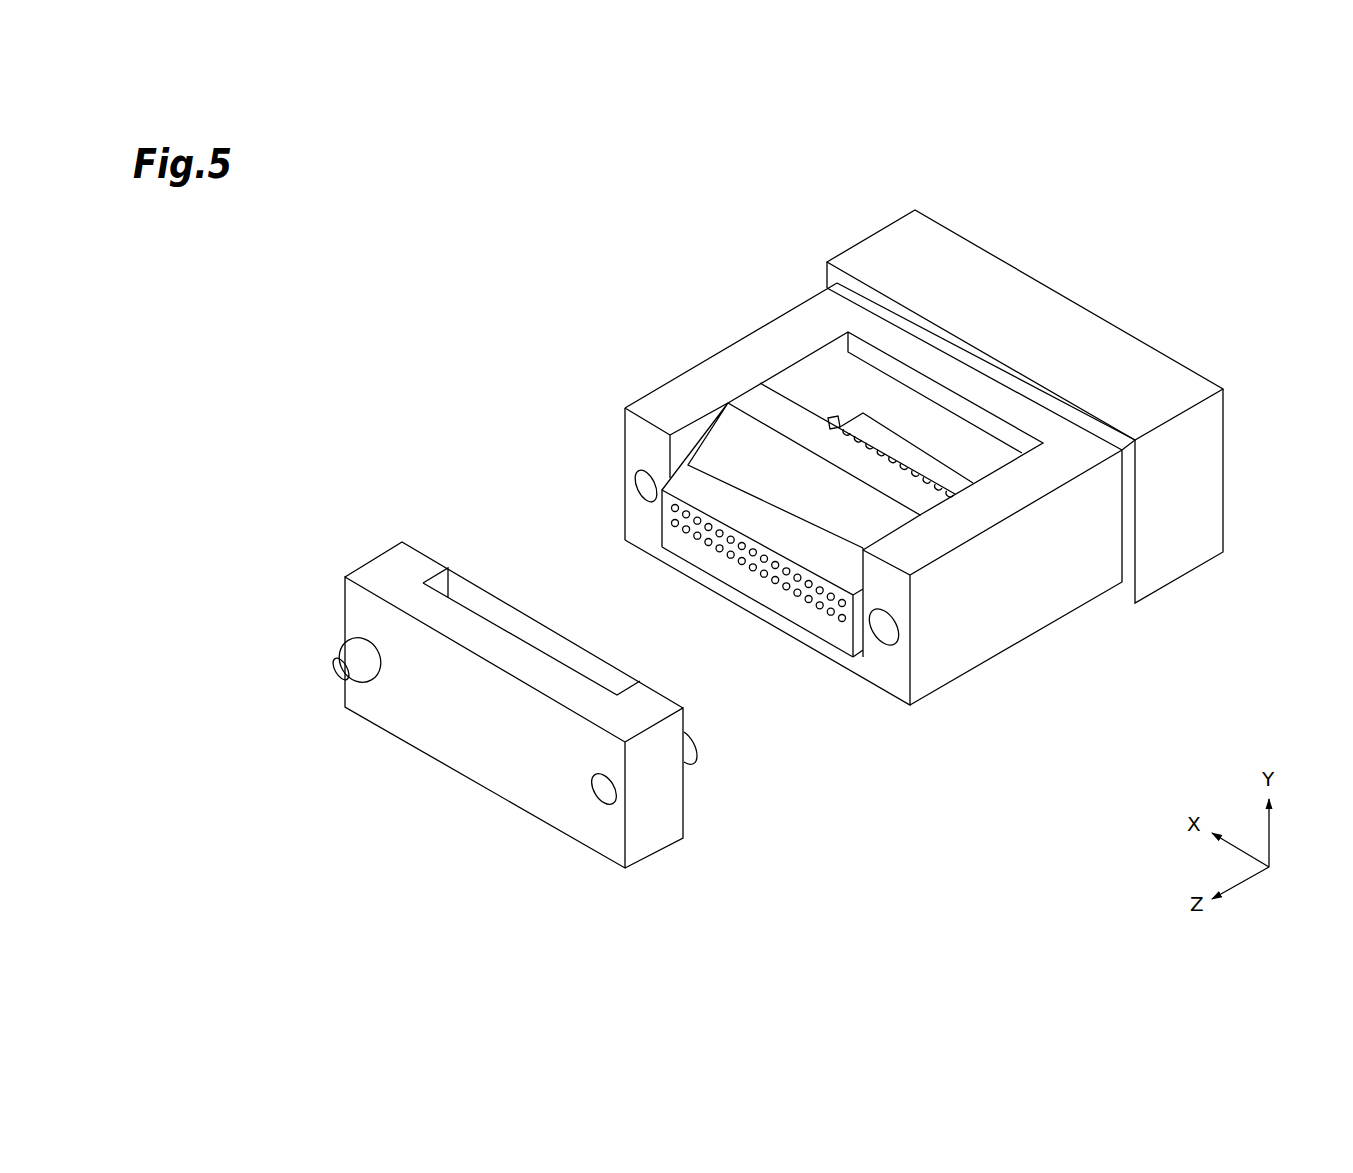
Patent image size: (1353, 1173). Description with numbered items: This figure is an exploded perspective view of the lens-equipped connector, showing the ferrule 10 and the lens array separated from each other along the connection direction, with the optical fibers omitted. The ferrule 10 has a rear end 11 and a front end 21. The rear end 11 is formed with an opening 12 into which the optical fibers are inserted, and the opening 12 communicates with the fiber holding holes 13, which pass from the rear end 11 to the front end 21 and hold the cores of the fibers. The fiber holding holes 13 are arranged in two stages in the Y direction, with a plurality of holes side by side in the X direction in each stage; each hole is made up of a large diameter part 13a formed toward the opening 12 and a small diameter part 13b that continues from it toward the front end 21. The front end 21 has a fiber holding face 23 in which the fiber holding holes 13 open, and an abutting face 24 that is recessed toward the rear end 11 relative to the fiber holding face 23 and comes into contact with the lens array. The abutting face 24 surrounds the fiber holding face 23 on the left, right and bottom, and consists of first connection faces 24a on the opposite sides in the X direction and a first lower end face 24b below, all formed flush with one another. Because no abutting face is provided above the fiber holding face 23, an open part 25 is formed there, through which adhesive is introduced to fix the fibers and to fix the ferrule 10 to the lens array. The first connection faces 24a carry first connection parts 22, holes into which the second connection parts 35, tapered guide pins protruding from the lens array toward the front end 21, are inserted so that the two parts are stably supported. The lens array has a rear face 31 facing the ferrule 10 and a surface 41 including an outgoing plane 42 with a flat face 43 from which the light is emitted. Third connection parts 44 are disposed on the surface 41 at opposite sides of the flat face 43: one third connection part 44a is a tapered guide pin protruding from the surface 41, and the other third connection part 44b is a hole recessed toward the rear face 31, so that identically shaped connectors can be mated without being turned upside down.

The ferrule 10 is at (750, 263).
The rear end 11 is at (900, 208).
The opening 12 is at (1070, 292).
The fiber holding holes 13 is at (960, 491).
The large diameter part 13a is at (897, 460).
The small diameter part 13b is at (707, 527).
The front end 21 is at (640, 400).
The first connection parts 22 is at (642, 480).
The fiber holding face 23 is at (792, 608).
The abutting face 24 is at (619, 639).
The first connection faces 24a is at (637, 522).
The first lower end face 24b is at (682, 563).
The open part 25 is at (757, 447).
The rear face 31 is at (642, 673).
The second connection parts 35 is at (693, 740).
The surface 41 is at (336, 608).
The outgoing plane 42 is at (511, 731).
The flat face 43 is at (462, 738).
The third connection parts 44 is at (434, 775).
The third connection part (guide pin) 44a is at (335, 675).
The third connection part (hole) 44b is at (603, 800).